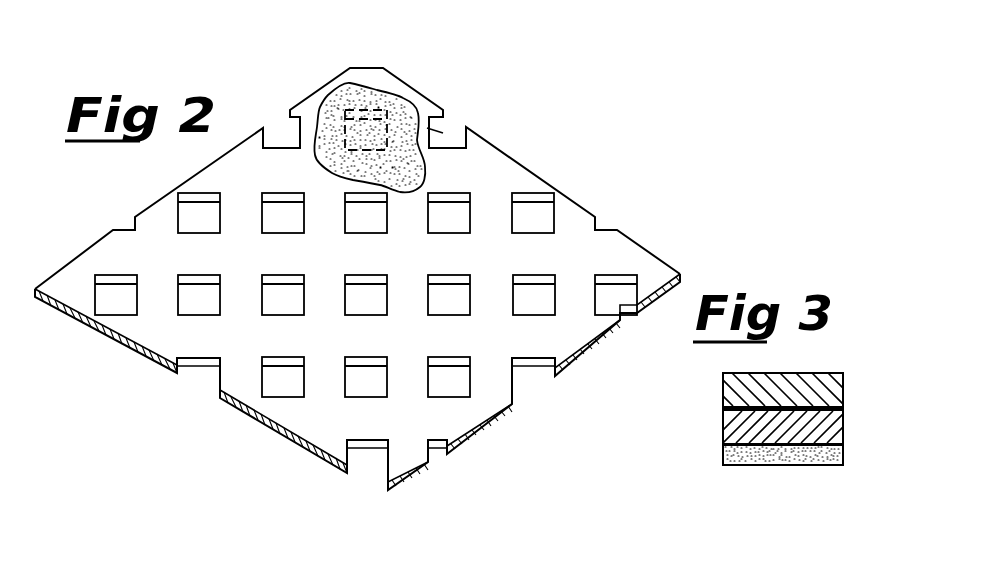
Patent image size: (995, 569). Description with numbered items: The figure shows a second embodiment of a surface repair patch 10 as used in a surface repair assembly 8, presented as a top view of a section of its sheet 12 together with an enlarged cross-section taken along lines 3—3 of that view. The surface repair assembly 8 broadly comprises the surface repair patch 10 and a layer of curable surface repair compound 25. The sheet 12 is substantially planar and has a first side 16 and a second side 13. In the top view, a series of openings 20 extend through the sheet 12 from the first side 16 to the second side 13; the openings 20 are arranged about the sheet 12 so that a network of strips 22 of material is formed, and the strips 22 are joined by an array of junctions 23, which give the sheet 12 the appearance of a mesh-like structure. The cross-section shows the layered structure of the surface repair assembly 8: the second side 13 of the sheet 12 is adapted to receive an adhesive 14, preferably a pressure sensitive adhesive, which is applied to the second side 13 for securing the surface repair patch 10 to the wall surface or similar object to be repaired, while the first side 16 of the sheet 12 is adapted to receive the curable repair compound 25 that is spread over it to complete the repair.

In FIG. 2, the surface repair assembly 8 is at (286, 74).
In FIG. 2, the surface repair patch 10 is at (375, 254).
In FIG. 2, the sheet 12 is at (110, 256).
In FIG. 3, the sheet 12 is at (716, 422).
In FIG. 2, the first side 16 is at (258, 185).
In FIG. 3, the first side 16 is at (737, 405).
In FIG. 2, the openings 20 is at (527, 210).
In FIG. 2, the strips 22 is at (470, 422).
In FIG. 2, the junctions 23 is at (540, 328).
In FIG. 2, the curable surface repair compound 25 is at (413, 147).
In FIG. 3, the curable surface repair compound 25 is at (813, 372).
In FIG. 2, the section line 3- 3 is at (368, 137).
In FIG. 3, the second side 13 is at (740, 452).
In FIG. 3, the adhesive 14 is at (760, 458).